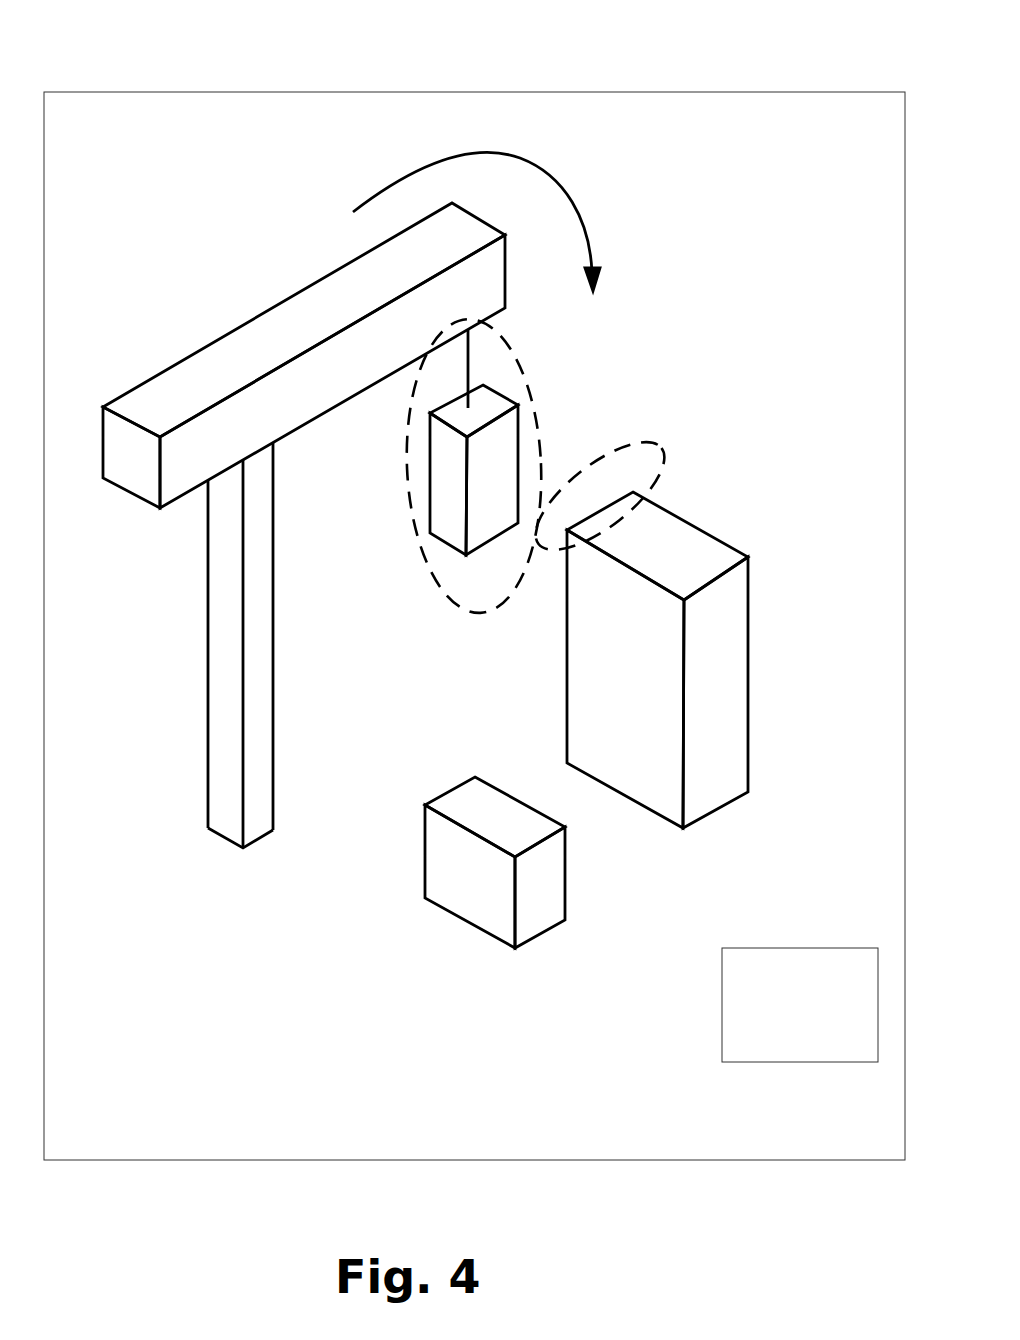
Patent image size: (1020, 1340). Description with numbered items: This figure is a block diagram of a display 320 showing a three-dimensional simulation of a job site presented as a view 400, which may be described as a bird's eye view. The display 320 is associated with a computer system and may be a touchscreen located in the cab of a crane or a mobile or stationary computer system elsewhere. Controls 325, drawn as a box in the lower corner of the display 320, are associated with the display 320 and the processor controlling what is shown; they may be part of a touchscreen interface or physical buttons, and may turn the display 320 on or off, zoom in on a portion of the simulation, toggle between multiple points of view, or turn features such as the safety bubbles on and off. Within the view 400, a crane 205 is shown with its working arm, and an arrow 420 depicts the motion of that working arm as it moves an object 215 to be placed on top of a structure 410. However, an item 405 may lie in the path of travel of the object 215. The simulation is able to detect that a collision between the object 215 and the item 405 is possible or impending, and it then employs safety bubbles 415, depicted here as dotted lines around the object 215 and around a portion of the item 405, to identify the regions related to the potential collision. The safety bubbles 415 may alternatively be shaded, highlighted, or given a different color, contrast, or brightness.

The view 400 is at (785, 53).
The display 320 is at (610, 1113).
The controls 325 is at (780, 1031).
The crane 205 is at (280, 333).
The object 215 is at (508, 496).
The item 405 is at (615, 678).
The structure 410 is at (458, 884).
The safety bubbles 415 is at (625, 445).
The arrow 420 is at (476, 221).